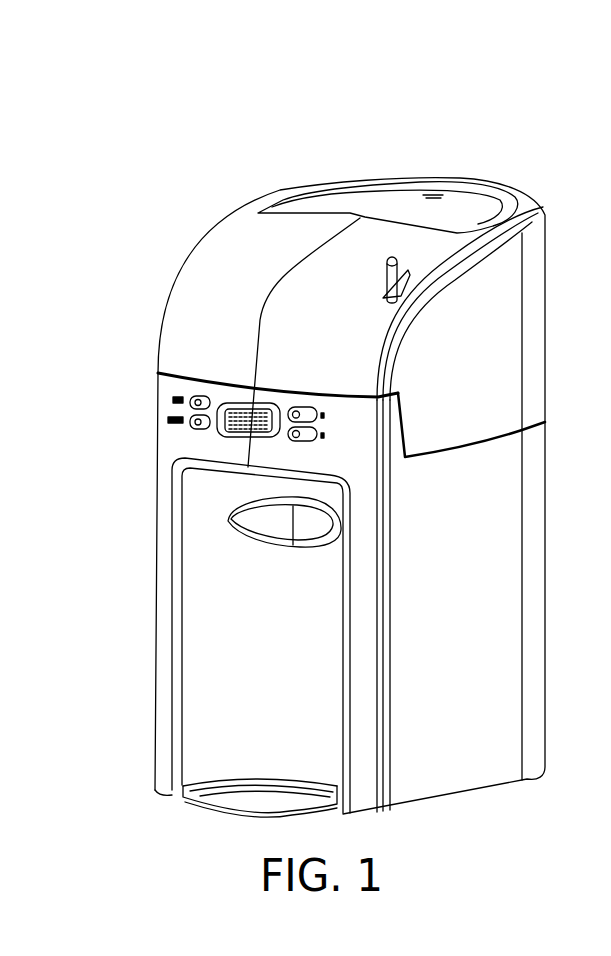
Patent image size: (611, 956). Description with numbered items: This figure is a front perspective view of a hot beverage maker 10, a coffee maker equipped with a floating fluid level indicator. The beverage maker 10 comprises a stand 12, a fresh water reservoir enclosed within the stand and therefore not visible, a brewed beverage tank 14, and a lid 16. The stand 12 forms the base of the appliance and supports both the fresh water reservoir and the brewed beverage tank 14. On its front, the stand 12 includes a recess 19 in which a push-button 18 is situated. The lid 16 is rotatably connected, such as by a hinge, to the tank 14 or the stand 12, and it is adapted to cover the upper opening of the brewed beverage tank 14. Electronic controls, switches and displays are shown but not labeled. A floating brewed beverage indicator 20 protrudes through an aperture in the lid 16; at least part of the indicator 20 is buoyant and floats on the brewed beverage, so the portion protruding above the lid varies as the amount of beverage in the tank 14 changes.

The hot beverage maker 10 is at (162, 130).
The stand 12 is at (455, 773).
The brewed beverage tank 14 is at (535, 332).
The lid 16 is at (215, 265).
The push-button 18 is at (272, 528).
The recess 19 is at (207, 672).
The floating brewed beverage indicator 20 is at (383, 271).